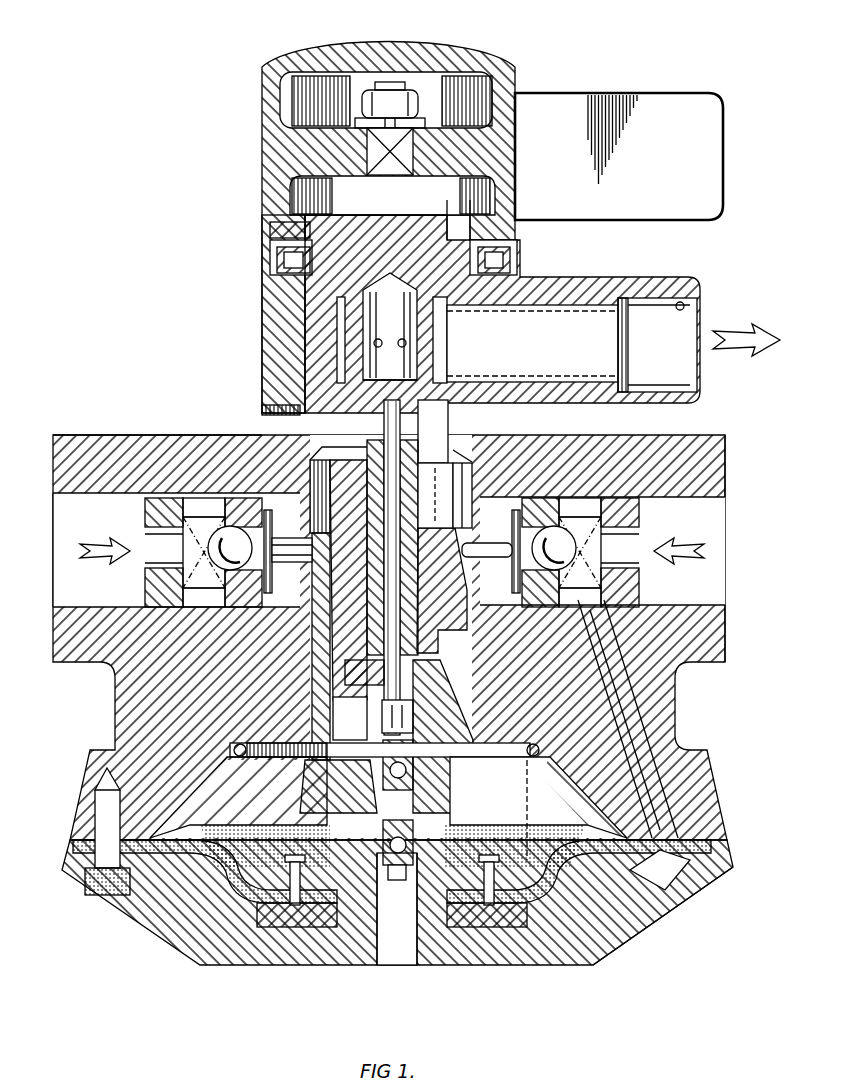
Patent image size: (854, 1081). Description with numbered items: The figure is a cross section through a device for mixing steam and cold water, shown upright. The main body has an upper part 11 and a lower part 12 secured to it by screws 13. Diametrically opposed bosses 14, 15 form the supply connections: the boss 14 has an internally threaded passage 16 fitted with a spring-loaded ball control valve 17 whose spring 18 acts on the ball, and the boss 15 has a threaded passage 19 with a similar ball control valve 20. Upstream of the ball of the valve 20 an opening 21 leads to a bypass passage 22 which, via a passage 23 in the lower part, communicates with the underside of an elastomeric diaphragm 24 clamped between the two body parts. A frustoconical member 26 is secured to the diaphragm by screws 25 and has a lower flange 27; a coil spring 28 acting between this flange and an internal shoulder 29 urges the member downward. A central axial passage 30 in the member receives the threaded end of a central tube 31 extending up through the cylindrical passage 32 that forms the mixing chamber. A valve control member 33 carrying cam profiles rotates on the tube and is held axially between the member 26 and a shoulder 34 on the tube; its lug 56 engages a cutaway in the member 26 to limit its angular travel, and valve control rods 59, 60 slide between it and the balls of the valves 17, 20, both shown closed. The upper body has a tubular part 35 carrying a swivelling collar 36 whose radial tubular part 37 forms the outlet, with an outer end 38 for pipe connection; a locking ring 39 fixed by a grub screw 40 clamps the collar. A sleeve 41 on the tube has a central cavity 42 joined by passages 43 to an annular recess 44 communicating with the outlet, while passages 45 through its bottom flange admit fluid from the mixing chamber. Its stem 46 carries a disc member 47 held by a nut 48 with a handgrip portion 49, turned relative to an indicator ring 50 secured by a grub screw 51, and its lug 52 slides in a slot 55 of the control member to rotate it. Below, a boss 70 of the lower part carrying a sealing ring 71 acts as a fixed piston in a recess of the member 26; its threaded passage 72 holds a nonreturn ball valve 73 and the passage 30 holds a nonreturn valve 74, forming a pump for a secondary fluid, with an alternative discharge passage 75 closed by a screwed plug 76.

The upper part 11 is at (155, 452).
The lower part 12 is at (207, 958).
The screws 13 is at (90, 897).
The boss 14 is at (92, 458).
The boss 15 is at (685, 478).
The passage 16 is at (77, 497).
The spring-loaded ball control valve 17 is at (217, 510).
The spring 18 is at (193, 517).
The passage 19 is at (703, 500).
The spring-loaded ball control valve 20 is at (578, 530).
The opening 21 is at (600, 590).
The bypass passage 22 is at (632, 710).
The passage 23 is at (663, 897).
The elastomeric diaphragm 24 is at (593, 917).
The screws 25 is at (285, 870).
The frustoconical member 26 is at (457, 813).
The flange 27 is at (267, 887).
The coil spring 28 is at (230, 755).
The internal shoulder 29 is at (288, 747).
The central axial passage 30 is at (473, 700).
The central tube 31 is at (413, 630).
The central cylindrical passage 32 is at (340, 445).
The valve control member 33 is at (317, 630).
The shoulder 34 is at (297, 410).
The tubular part 35 is at (520, 298).
The collar 36 is at (277, 320).
The tubular part 37 is at (587, 298).
The outer end 38 is at (685, 305).
The locking ring 39 is at (500, 255).
The grub screw 40 is at (270, 248).
The sleeve 41 is at (460, 260).
The central cavity 42 is at (372, 310).
The passages 43 is at (420, 345).
The annular exterior recess 44 is at (337, 337).
The passages 45 is at (450, 375).
The stem 46 is at (480, 177).
The circular disc member 47 is at (447, 147).
The nut 48 is at (397, 103).
The handgrip portion 49 is at (648, 123).
The indicator ring 50 is at (272, 238).
The grub screw 51 is at (282, 195).
The lug 52 is at (448, 428).
The slot 55 is at (447, 483).
The lug 56 is at (360, 660).
The valve control rod 59 is at (313, 603).
The valve control rod 60 is at (480, 568).
The boss 70 is at (430, 870).
The sealing ring 71 is at (347, 825).
The internal passage 72 is at (393, 958).
The nonreturn ball valve 73 is at (397, 870).
The nonreturn valve 74 is at (407, 780).
The passage 75 is at (348, 717).
The screwed plug 76 is at (377, 703).